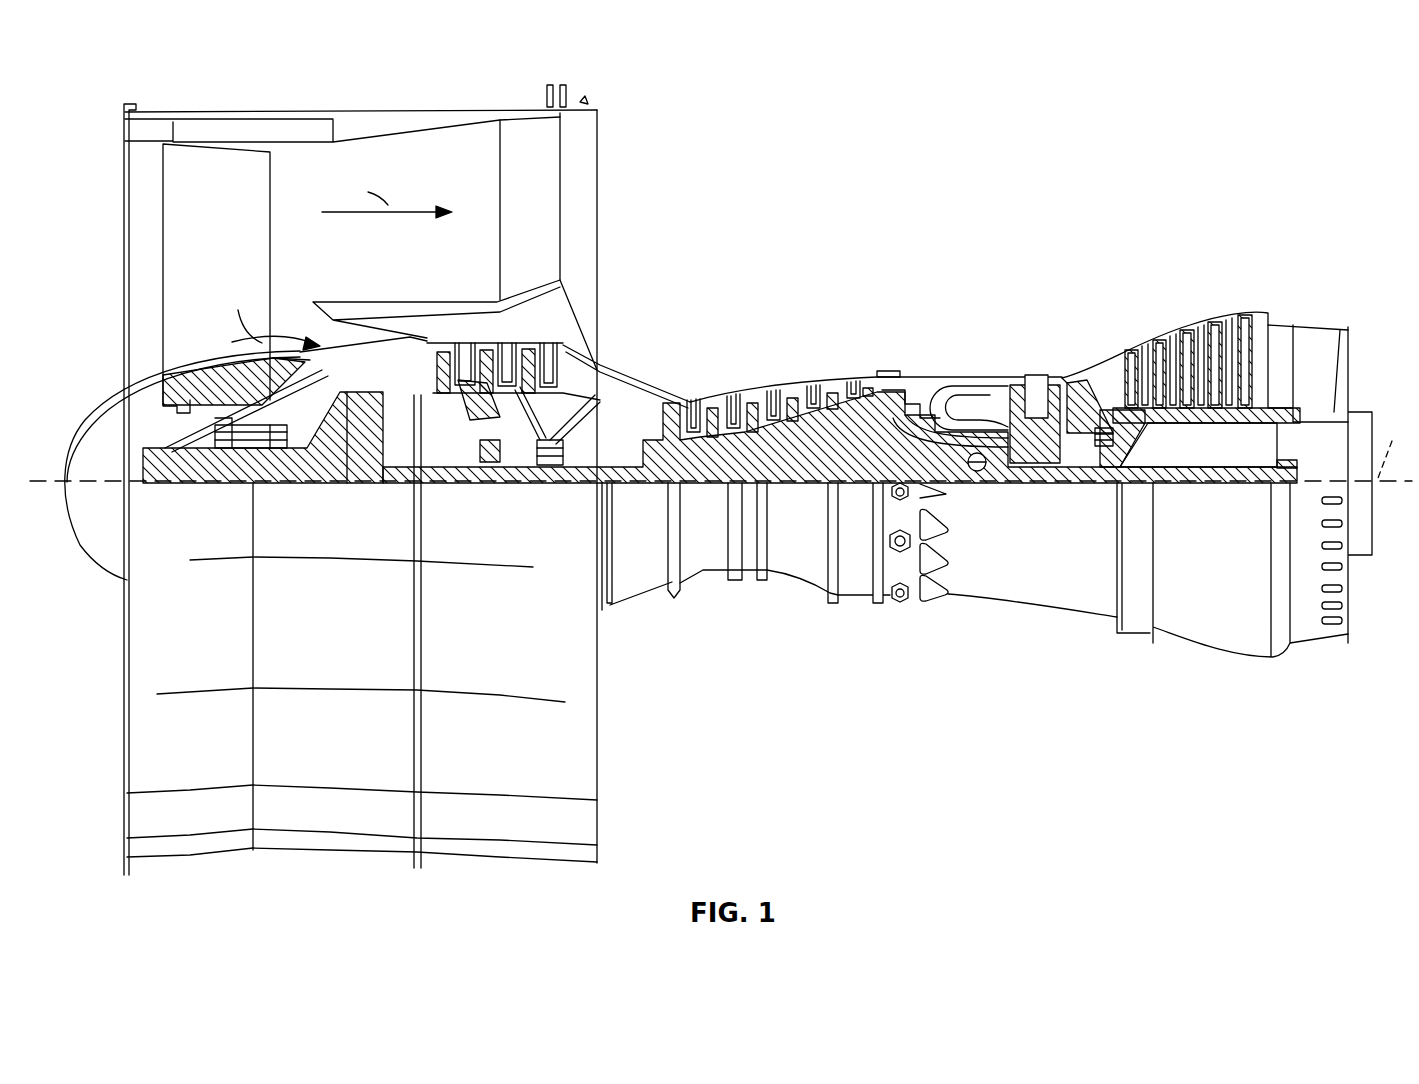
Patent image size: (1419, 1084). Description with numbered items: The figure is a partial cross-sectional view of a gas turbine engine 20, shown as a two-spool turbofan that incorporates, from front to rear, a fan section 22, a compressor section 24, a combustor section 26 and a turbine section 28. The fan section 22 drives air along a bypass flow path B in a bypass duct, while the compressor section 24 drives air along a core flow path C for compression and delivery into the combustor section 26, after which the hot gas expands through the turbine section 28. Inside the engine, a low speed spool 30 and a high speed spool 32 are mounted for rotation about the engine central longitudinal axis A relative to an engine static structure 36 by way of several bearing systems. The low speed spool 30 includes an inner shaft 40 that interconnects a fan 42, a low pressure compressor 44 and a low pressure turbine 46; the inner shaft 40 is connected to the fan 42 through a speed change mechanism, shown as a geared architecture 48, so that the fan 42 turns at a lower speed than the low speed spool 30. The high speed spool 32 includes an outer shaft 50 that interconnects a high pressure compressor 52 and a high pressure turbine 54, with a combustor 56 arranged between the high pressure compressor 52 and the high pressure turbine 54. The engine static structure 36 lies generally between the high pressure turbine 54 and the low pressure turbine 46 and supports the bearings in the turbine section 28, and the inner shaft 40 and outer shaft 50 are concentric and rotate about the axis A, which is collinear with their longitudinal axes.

The gas turbine engine 20 is at (1174, 150).
The fan section 22 is at (204, 111).
The compressor section 24 is at (790, 334).
The combustor section 26 is at (953, 336).
The turbine section 28 is at (1106, 320).
The low speed spool 30 is at (816, 488).
The high speed spool 32 is at (880, 420).
The engine static structure 36 is at (856, 602).
The inner shaft 40 is at (612, 485).
The fan 42 is at (240, 237).
The low pressure compressor 44 is at (510, 358).
The low pressure turbine 46 is at (1205, 345).
The geared architecture 48 is at (363, 448).
The outer shaft 50 is at (990, 460).
The high pressure compressor 52 is at (777, 450).
The high pressure turbine 54 is at (1040, 378).
The combustor 56 is at (963, 399).